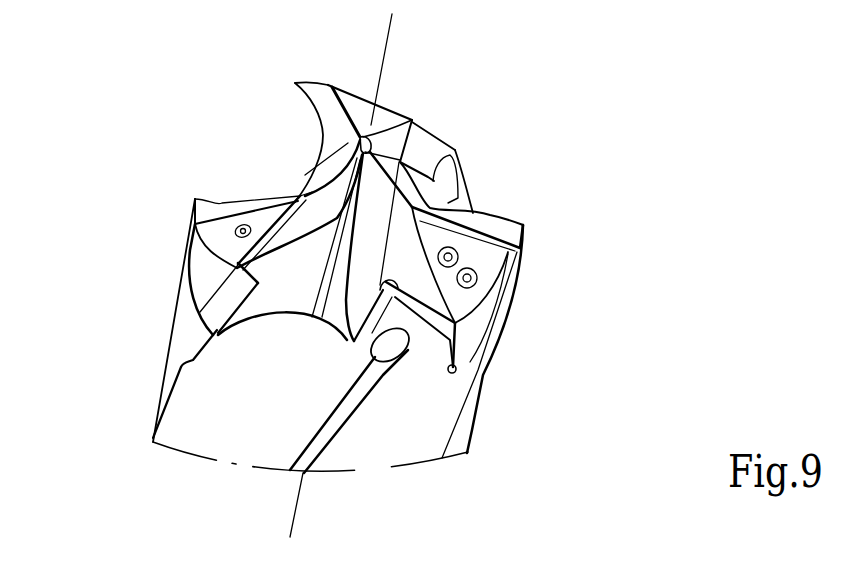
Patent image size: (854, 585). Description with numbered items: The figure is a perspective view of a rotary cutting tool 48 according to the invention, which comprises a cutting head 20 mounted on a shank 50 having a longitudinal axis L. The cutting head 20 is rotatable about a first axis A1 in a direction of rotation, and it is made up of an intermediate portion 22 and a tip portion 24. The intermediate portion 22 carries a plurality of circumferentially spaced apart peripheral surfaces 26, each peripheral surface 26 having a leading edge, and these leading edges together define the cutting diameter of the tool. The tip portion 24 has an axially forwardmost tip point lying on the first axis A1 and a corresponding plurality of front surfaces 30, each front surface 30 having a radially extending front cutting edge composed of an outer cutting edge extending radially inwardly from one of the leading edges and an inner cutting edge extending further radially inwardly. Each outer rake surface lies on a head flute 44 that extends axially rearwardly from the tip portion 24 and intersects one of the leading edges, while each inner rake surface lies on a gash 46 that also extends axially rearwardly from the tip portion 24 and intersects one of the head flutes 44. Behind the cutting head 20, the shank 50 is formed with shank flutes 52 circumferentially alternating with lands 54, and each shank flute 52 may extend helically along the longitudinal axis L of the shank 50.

The cutting head 20 is at (238, 172).
The intermediate portion 22 is at (487, 312).
The tip portion 24 is at (462, 226).
The peripheral surface 26 is at (213, 283).
The front surface 30 is at (325, 98).
The head flute 44 is at (312, 291).
The gash 46 is at (379, 236).
The rotary cutting tool 48 is at (557, 234).
The shank 50 is at (148, 383).
The shank flute 52 is at (202, 415).
The land 54 is at (363, 438).
The first axis A1 is at (402, 69).
The longitudinal axis L is at (301, 513).